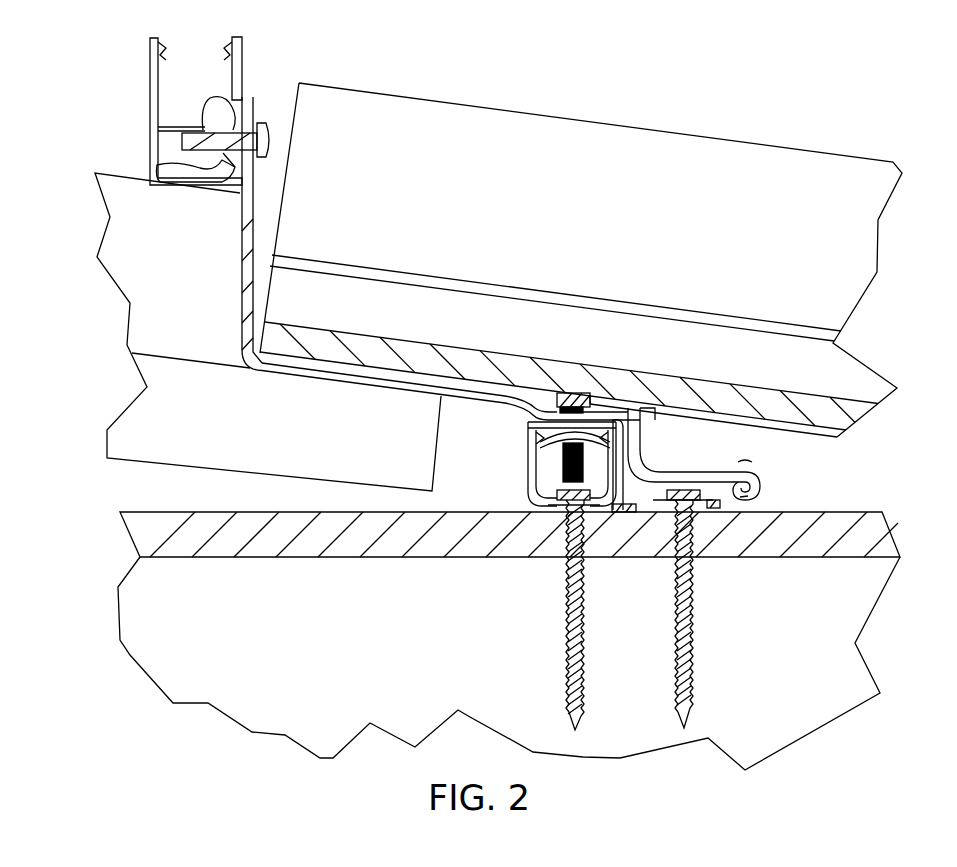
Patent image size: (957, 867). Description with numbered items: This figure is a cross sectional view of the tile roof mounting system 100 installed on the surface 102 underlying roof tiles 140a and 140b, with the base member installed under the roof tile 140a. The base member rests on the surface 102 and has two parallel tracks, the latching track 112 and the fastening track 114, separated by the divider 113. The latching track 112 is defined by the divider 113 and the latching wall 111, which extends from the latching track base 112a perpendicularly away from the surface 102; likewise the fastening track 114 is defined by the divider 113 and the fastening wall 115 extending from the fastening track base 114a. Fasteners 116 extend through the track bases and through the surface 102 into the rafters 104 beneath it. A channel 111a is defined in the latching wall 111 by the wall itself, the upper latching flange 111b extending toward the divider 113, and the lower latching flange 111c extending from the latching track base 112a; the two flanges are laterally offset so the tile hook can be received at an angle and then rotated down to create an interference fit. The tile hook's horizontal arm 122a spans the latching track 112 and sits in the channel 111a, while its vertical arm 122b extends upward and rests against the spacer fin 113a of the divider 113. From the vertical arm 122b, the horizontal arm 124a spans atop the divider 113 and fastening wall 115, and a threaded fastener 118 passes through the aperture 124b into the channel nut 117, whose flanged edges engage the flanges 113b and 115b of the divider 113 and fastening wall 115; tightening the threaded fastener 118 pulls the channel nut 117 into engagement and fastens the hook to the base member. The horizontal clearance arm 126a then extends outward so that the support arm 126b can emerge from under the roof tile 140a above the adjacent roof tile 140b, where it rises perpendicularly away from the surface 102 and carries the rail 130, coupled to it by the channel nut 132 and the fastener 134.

The tile roof mounting system 100 is at (848, 484).
The surface 102 is at (124, 518).
The rafters 104 is at (135, 645).
The latching wall 111 is at (755, 478).
The channel 111a is at (748, 496).
The upper latching flange 111b is at (735, 461).
The lower latching flange 111c is at (714, 510).
The latching track 112 is at (656, 494).
The latching track base 112a is at (662, 500).
The divider 113 is at (615, 470).
The spacer fin 113a is at (628, 505).
The flange 113b is at (655, 410).
The fastening track 114 is at (556, 470).
The fastening track base 114a is at (540, 508).
The fastening wall 115 is at (530, 483).
The flange 115b is at (530, 425).
The fasteners 116 is at (673, 688).
The channel nut 117 is at (540, 444).
The threaded fastener 118 is at (572, 393).
The horizontal arm 122a is at (718, 472).
The vertical arm 122b is at (634, 407).
The horizontal arm 124a is at (545, 406).
The aperture 124b is at (515, 392).
The horizontal clearance arm 126a is at (293, 377).
The support arm 126b is at (240, 258).
The rail 130 is at (150, 97).
The channel nut 132 is at (215, 152).
The fastener 134 is at (274, 128).
The roof tile 140a is at (853, 350).
The roof tile 140b is at (105, 445).